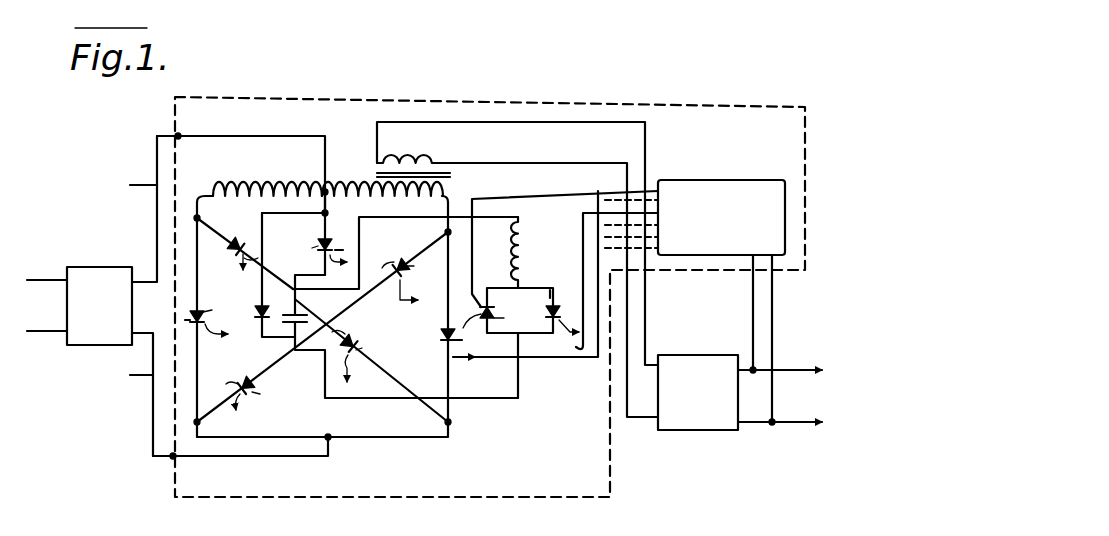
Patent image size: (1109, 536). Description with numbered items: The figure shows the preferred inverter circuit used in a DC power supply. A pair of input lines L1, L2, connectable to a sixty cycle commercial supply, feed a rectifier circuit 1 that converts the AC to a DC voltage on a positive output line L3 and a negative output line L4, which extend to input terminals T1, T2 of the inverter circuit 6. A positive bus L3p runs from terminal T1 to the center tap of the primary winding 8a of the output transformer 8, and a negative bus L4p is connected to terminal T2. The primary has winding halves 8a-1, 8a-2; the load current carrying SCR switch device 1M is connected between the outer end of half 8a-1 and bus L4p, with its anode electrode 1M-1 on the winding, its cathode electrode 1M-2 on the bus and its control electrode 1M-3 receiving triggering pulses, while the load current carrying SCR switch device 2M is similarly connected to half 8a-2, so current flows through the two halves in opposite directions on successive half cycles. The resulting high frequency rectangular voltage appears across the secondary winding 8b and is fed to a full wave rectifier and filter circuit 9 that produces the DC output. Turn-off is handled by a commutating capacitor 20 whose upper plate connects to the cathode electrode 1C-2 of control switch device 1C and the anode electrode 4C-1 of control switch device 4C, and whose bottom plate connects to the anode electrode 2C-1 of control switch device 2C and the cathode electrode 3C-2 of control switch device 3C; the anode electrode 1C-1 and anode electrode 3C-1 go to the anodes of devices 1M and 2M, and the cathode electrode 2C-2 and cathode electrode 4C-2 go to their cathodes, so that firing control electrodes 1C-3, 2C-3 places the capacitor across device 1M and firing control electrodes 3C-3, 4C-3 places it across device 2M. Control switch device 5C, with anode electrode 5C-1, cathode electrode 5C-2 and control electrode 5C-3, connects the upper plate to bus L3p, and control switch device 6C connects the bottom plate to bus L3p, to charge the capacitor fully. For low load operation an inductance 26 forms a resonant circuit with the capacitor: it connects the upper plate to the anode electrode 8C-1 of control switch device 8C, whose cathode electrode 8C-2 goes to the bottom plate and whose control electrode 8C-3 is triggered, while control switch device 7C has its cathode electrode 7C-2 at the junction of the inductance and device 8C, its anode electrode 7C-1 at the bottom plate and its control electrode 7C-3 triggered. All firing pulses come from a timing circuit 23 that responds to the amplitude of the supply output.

The rectifier circuit 1 is at (90, 267).
The inverter circuit 6 is at (428, 95).
The output transformer 8 is at (427, 269).
The primary winding 8a is at (320, 172).
The primary winding half 8a-1 is at (255, 180).
The primary winding half 8a-2 is at (361, 182).
The secondary winding 8b is at (420, 158).
The full wave rectifier and filter circuit 9 is at (697, 432).
The commutating capacitor 20 is at (303, 348).
The timing circuit 23 is at (731, 180).
The inductance 26 is at (523, 236).
The control SCR switch device 1C is at (261, 251).
The anode electrode of control switch device 1C 1C-1 is at (240, 258).
The cathode electrode of control switch device 1C 1C-2 is at (262, 246).
The control electrode of control switch device 1C 1C-3 is at (258, 258).
The control SCR switch device 2C is at (322, 334).
The anode electrode of control switch device 2C 2C-1 is at (272, 393).
The cathode electrode of control switch device 2C 2C-2 is at (236, 385).
The control electrode of control switch device 2C 2C-3 is at (245, 416).
The control SCR switch device 3C is at (410, 260).
The anode electrode of control switch device 3C 3C-1 is at (425, 267).
The cathode electrode of control switch device 3C 3C-2 is at (382, 268).
The control electrode of control switch device 3C 3C-3 is at (423, 290).
The control SCR switch device 4C is at (372, 361).
The anode electrode of control switch device 4C 4C-1 is at (345, 334).
The cathode electrode of control switch device 4C 4C-2 is at (362, 348).
The control electrode of control switch device 4C 4C-3 is at (358, 375).
The control SCR switch device 5C is at (323, 243).
The anode electrode of control switch device 5C 5C-1 is at (330, 235).
The cathode electrode of control switch device 5C 5C-2 is at (312, 248).
The control electrode of control switch device 5C 5C-3 is at (326, 272).
The control SCR switch device 6C is at (275, 275).
The control SCR switch device 7C is at (555, 274).
The anode electrode of control switch device 7C 7C-1 is at (515, 318).
The cathode electrode of control switch device 7C 7C-2 is at (484, 304).
The control electrode of control switch device 7C 7C-3 is at (525, 274).
The control SCR switch device 8C is at (596, 302).
The anode electrode of control switch device 8C 8C-1 is at (549, 290).
The cathode electrode of control switch device 8C 8C-2 is at (561, 336).
The control electrode of control switch device 8C 8C-3 is at (584, 352).
The load current carrying SCR switch device 1M is at (194, 327).
The anode electrode of switch device 1M 1M-1 is at (224, 301).
The cathode electrode of switch device 1M 1M-2 is at (188, 320).
The control electrode of switch device 1M 1M-3 is at (205, 332).
The load current carrying SCR switch device 2M is at (433, 337).
The positive input terminal T1 is at (176, 134).
The negative input terminal T2 is at (170, 459).
The input line L1 is at (45, 280).
The input line L2 is at (46, 330).
The positive output line L3 is at (131, 209).
The positive bus L3p is at (220, 134).
The negative output line L4 is at (128, 394).
The negative bus L4p is at (228, 462).